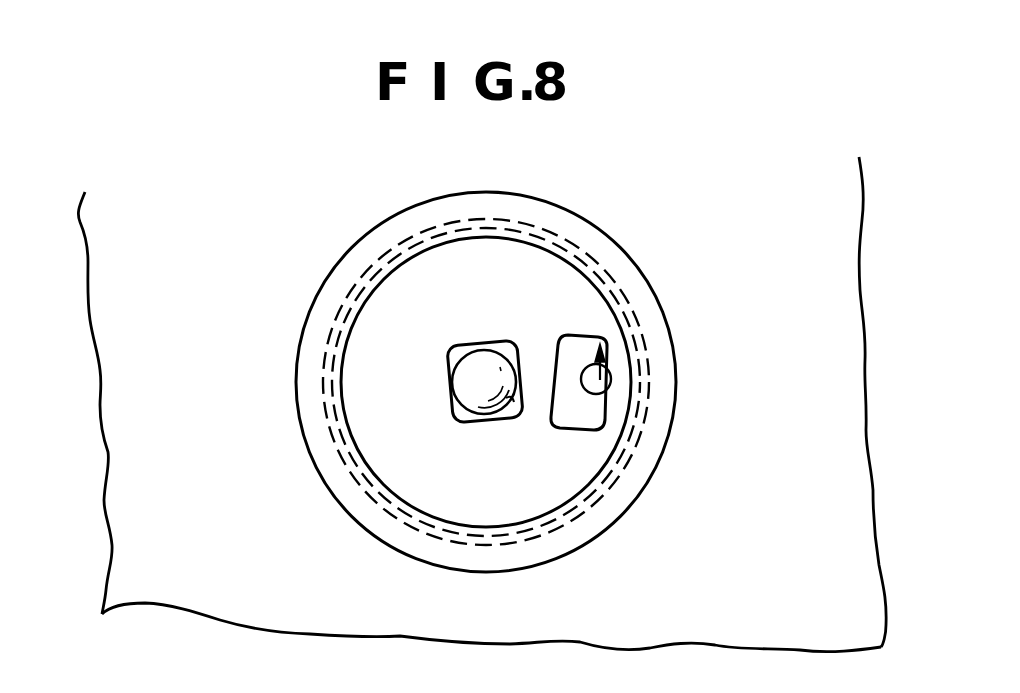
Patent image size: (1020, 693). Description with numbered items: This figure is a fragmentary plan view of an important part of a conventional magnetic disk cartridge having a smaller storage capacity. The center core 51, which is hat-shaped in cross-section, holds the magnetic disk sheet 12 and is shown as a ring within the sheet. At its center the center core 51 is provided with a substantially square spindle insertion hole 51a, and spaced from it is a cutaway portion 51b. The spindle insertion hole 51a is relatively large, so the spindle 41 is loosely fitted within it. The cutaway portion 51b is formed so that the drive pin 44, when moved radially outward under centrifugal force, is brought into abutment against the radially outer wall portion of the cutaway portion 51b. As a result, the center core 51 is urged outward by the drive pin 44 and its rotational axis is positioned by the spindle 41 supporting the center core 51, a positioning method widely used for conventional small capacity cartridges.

The magnetic disk sheet 12 is at (737, 632).
The center core 51 is at (584, 211).
The spindle insertion hole 51a is at (512, 402).
The cutaway portion 51b is at (553, 427).
The spindle 41 is at (469, 358).
The drive pin 44 is at (607, 390).